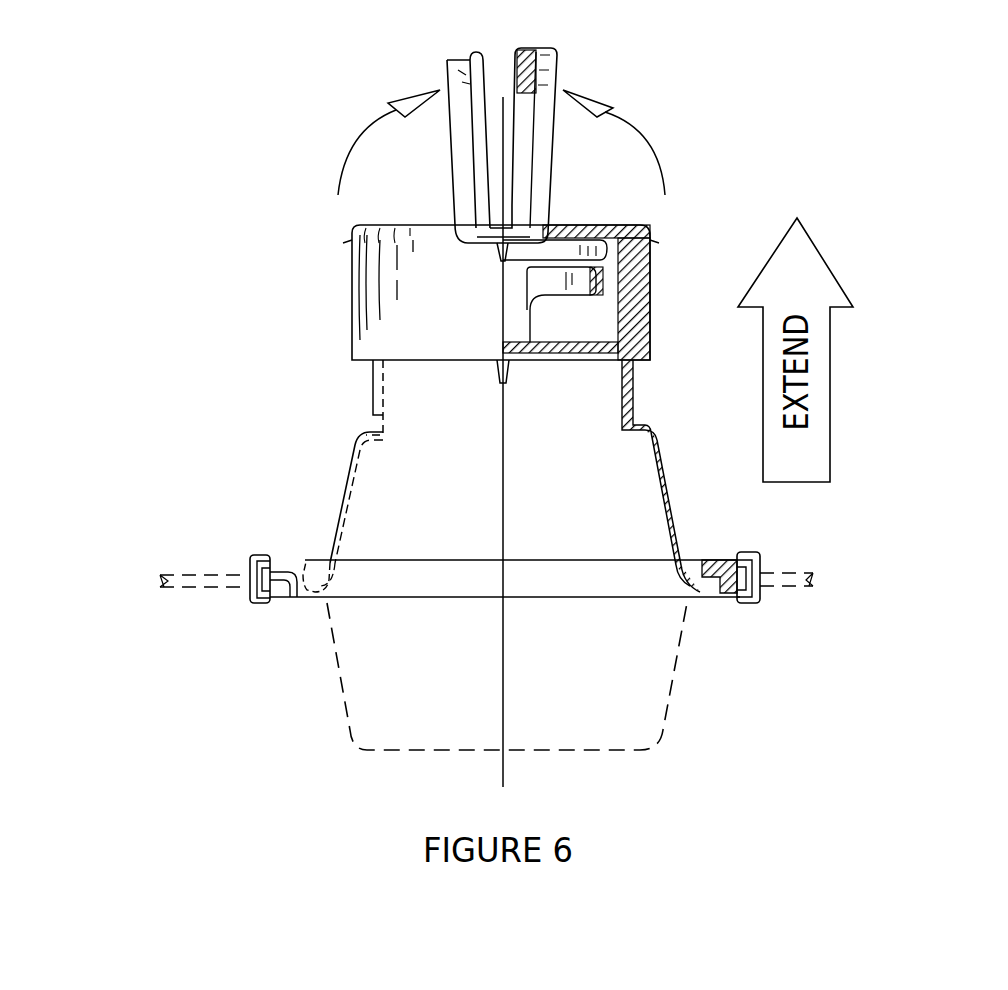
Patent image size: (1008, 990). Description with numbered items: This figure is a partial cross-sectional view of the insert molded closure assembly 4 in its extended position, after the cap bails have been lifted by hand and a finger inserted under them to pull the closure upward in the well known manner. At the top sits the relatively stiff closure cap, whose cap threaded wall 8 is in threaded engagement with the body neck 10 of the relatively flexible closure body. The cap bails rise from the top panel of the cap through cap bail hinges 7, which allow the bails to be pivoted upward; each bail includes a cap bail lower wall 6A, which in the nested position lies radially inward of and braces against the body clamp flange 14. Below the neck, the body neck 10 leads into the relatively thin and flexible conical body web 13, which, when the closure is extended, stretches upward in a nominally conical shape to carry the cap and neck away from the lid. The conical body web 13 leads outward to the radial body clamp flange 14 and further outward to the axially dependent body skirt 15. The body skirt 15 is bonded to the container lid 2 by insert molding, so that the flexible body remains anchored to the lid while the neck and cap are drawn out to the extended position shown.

The cap bail lower wall 6A is at (447, 62).
The closure assembly 4 is at (715, 187).
The cap threaded wall 8 is at (350, 283).
The cap bail hinge 7 is at (480, 242).
The body neck 10 is at (373, 415).
The conical body web 13 is at (330, 513).
The body clamp flange 14 is at (280, 560).
The container lid 2 is at (188, 575).
The body skirt 15 is at (255, 583).